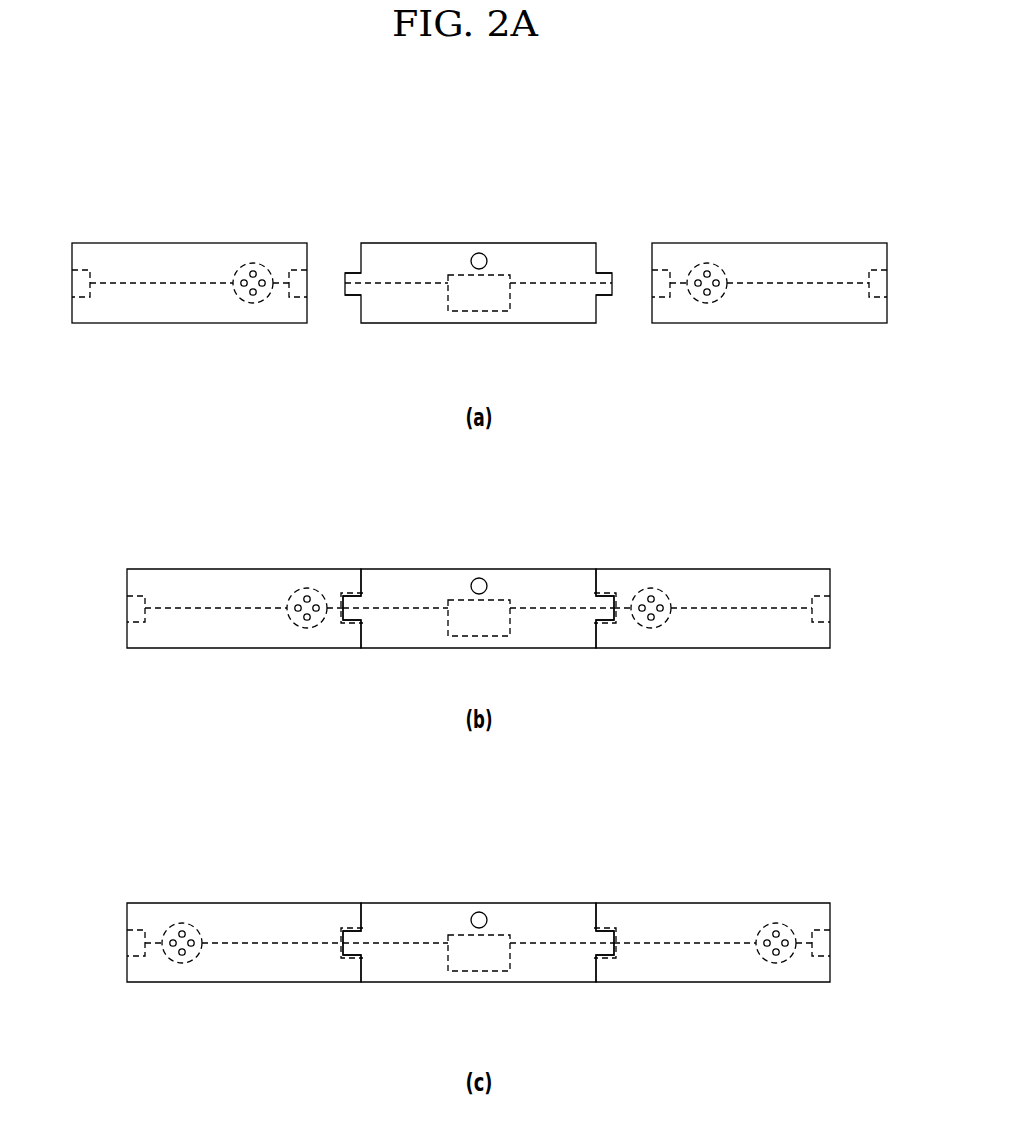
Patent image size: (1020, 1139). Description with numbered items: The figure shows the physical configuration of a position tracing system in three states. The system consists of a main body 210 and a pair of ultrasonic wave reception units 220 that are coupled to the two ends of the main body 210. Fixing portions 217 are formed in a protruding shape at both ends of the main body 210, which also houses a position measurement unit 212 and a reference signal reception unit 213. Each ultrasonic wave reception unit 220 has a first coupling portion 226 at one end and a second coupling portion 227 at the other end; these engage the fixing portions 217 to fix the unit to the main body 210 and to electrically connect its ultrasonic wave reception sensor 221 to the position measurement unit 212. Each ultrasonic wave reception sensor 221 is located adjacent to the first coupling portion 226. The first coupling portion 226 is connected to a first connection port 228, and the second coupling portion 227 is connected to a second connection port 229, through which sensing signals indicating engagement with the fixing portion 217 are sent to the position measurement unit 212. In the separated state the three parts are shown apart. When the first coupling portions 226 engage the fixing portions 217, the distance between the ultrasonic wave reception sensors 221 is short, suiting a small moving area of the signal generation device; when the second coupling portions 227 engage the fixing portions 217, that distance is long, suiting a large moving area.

The main body 210 is at (476, 228).
The position measurement unit 212 is at (498, 275).
The reference signal reception unit 213 is at (470, 261).
The fixing portion 217 is at (355, 290).
The ultrasonic wave reception unit 220 is at (186, 228).
The ultrasonic wave reception sensor 221 is at (307, 630).
The first coupling portion 226 is at (298, 290).
The second coupling portion 227 is at (86, 290).
The first connection port 228 is at (276, 284).
The second connection port 229 is at (270, 946).